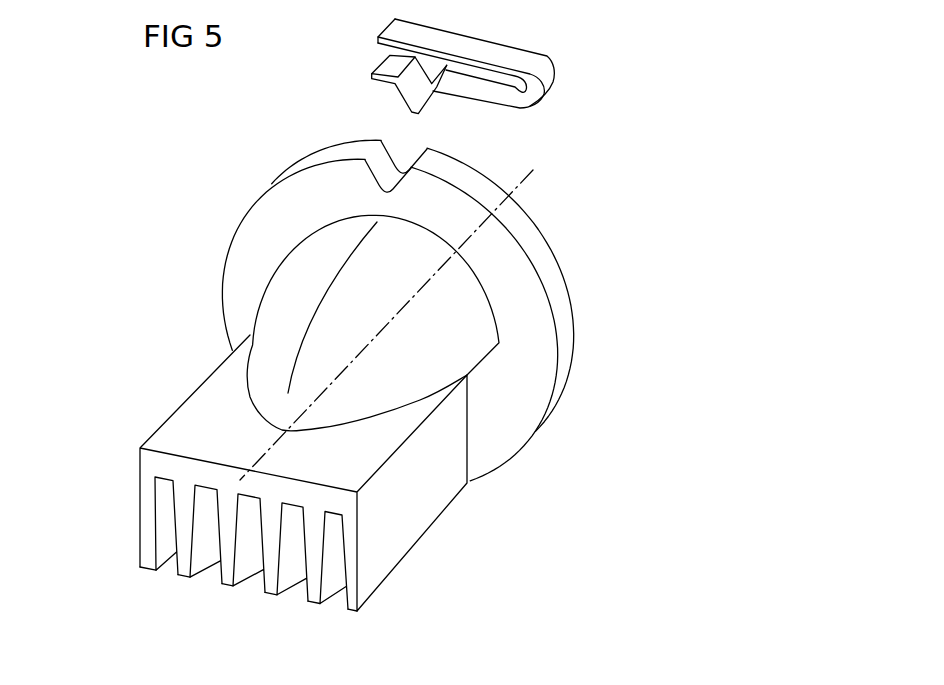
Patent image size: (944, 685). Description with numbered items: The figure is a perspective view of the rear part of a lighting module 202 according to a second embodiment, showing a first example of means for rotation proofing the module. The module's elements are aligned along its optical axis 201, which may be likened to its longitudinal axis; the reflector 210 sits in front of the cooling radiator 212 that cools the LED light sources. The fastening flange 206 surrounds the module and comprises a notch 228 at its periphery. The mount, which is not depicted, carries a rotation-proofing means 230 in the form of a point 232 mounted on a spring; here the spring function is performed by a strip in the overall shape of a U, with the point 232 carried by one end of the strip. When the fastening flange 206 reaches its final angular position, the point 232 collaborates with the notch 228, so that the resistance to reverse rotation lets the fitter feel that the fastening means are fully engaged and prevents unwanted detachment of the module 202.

The optical axis 201 is at (531, 170).
The lighting module 202 is at (366, 291).
The fastening flange 206 is at (512, 218).
The reflector 210 is at (268, 322).
The cooling radiator 212 is at (420, 518).
The notch 228 is at (381, 167).
The rotation-proofing means 230 is at (508, 80).
The point 232 is at (420, 113).